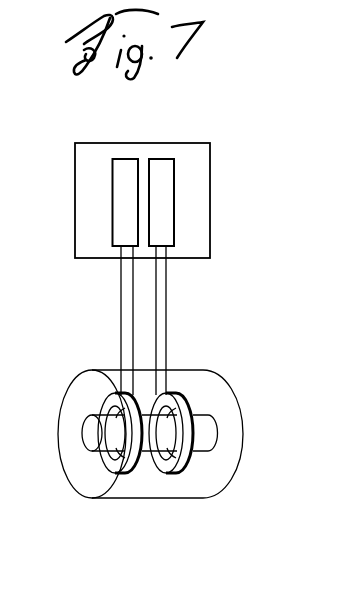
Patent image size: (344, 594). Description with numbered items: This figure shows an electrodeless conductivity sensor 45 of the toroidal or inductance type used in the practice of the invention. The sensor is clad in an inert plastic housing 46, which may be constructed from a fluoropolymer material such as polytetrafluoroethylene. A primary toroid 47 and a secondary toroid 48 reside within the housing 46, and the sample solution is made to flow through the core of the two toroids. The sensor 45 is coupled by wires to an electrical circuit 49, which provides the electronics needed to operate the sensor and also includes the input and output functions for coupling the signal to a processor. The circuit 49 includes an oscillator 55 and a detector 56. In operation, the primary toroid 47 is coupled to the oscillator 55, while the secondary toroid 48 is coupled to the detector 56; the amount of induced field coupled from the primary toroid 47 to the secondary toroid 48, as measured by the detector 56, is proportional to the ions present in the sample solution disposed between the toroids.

The conductivity sensor 45 is at (168, 312).
The housing 46 is at (70, 475).
The primary toroid 47 is at (108, 400).
The secondary toroid 48 is at (190, 398).
The electrical circuit 49 is at (75, 160).
The oscillator 55 is at (120, 159).
The detector 56 is at (165, 159).